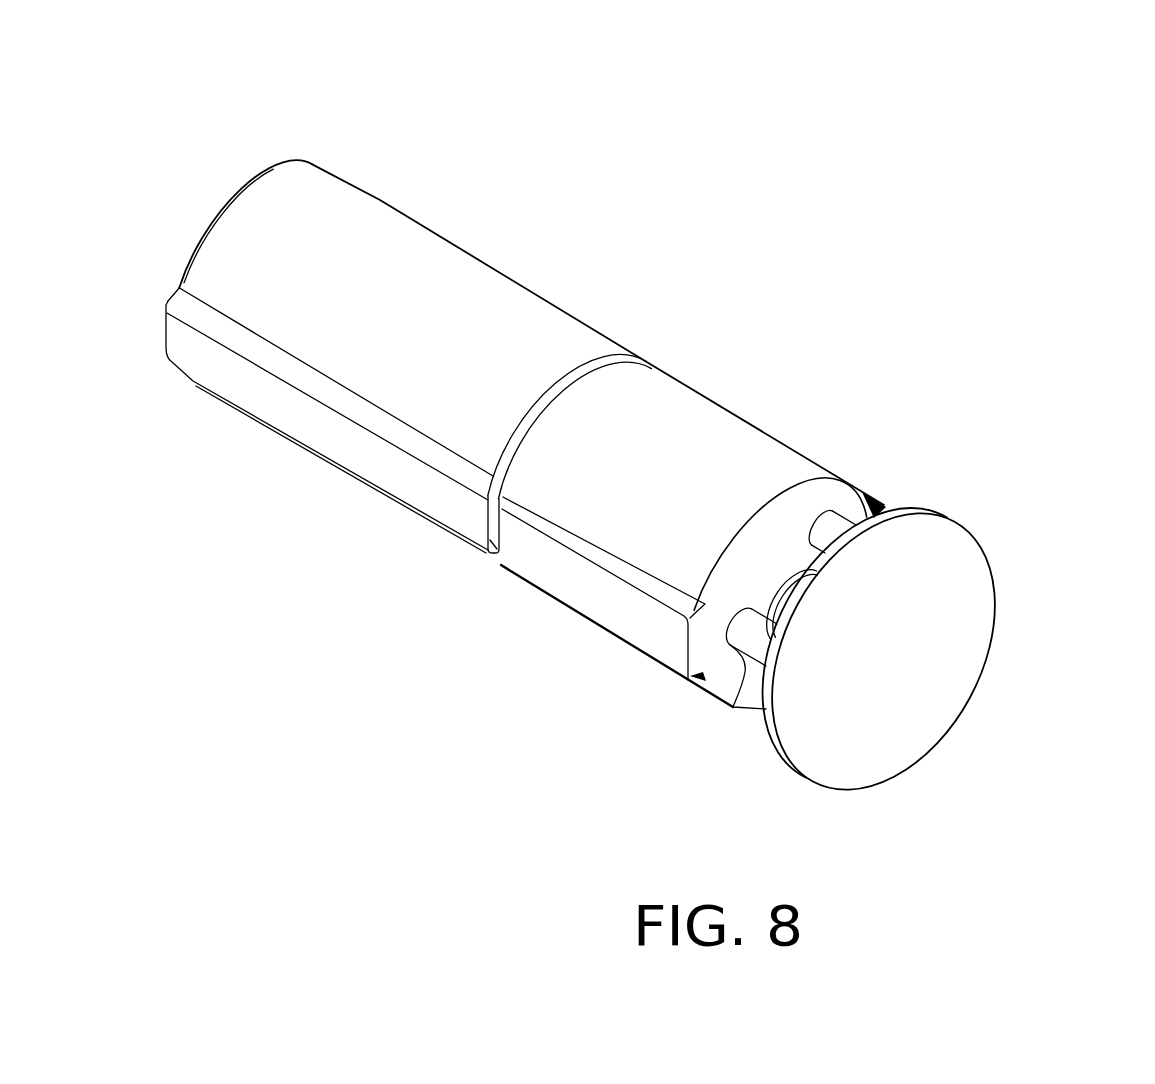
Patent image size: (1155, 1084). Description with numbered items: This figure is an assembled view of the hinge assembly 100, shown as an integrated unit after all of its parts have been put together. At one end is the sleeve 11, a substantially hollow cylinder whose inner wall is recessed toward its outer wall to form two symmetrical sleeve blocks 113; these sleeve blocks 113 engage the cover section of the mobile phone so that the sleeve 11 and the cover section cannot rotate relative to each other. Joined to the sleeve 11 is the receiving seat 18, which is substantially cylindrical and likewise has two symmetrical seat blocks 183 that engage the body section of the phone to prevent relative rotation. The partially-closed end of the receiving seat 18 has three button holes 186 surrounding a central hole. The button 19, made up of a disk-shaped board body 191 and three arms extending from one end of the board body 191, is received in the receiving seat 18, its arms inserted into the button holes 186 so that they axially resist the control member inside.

The hinge assembly 100 is at (629, 441).
The sleeve 11 is at (473, 312).
The sleeve blocks 113 is at (342, 428).
The receiving seat 18 is at (692, 433).
The seat blocks 183 is at (622, 610).
The button holes 186 is at (740, 683).
The board body 191 is at (837, 530).
The button 19 is at (952, 595).